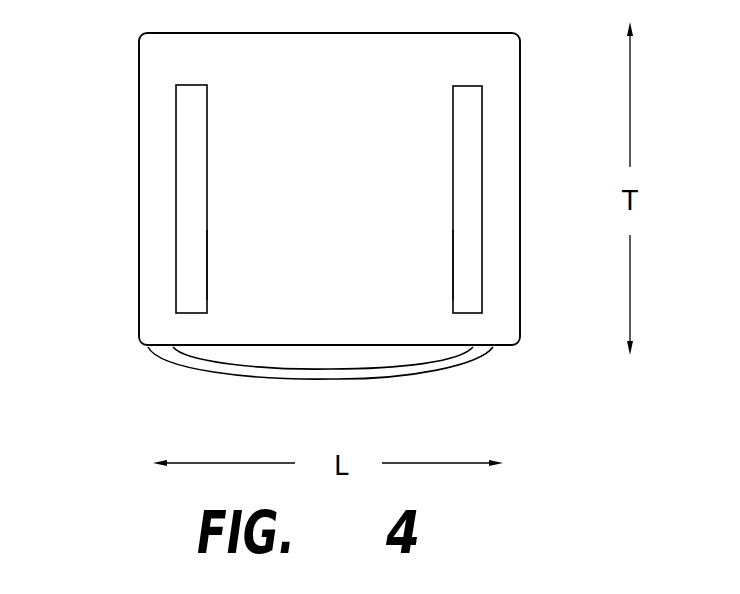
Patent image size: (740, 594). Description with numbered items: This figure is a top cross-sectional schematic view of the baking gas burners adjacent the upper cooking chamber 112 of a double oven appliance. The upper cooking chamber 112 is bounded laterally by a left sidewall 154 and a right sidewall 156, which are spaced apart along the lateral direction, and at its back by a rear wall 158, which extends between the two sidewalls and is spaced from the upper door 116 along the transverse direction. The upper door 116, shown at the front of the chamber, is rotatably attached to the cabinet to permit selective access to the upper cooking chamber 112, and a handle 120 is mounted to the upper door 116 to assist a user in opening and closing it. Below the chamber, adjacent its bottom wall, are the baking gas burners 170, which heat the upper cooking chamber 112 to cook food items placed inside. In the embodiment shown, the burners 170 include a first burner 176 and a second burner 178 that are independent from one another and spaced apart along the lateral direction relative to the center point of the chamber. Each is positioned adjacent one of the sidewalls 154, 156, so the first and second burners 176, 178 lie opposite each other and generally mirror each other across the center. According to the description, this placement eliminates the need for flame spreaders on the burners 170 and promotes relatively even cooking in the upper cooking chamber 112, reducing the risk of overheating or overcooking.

The upper cooking chamber 112 is at (493, 112).
The upper door 116 is at (238, 347).
The handle 120 is at (422, 375).
The left sidewall 154 is at (139, 146).
The right sidewall 156 is at (520, 198).
The rear wall 158 is at (347, 33).
The baking gas burner 170 is at (208, 255).
The first burner 176 is at (192, 172).
The second burner 178 is at (465, 172).